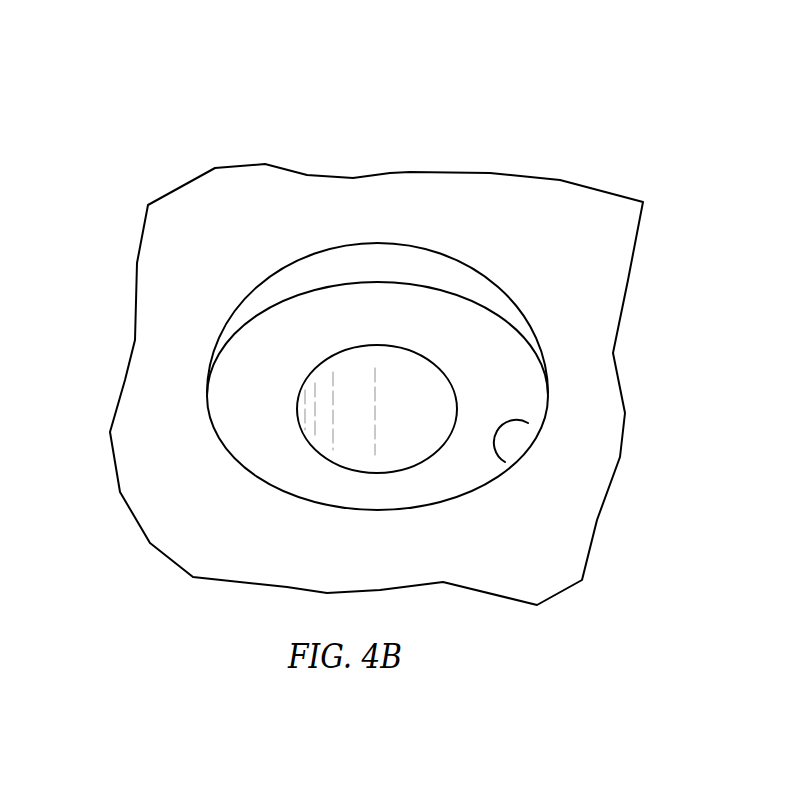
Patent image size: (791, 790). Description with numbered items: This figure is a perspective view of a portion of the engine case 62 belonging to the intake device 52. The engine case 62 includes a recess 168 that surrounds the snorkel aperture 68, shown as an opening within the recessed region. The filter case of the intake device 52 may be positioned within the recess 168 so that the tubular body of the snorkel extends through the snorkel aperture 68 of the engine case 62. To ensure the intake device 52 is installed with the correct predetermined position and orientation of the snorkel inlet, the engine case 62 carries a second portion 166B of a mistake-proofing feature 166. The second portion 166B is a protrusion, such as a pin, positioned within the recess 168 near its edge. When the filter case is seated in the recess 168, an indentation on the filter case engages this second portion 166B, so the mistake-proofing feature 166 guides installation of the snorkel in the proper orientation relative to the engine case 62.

The intake device 52 is at (526, 109).
The engine case 62 is at (575, 218).
The recess 168 is at (301, 300).
The snorkel aperture 68 is at (391, 392).
The mistake-proofing feature 166 is at (621, 433).
The second portion of the mistake-proofing feature 166B is at (508, 442).